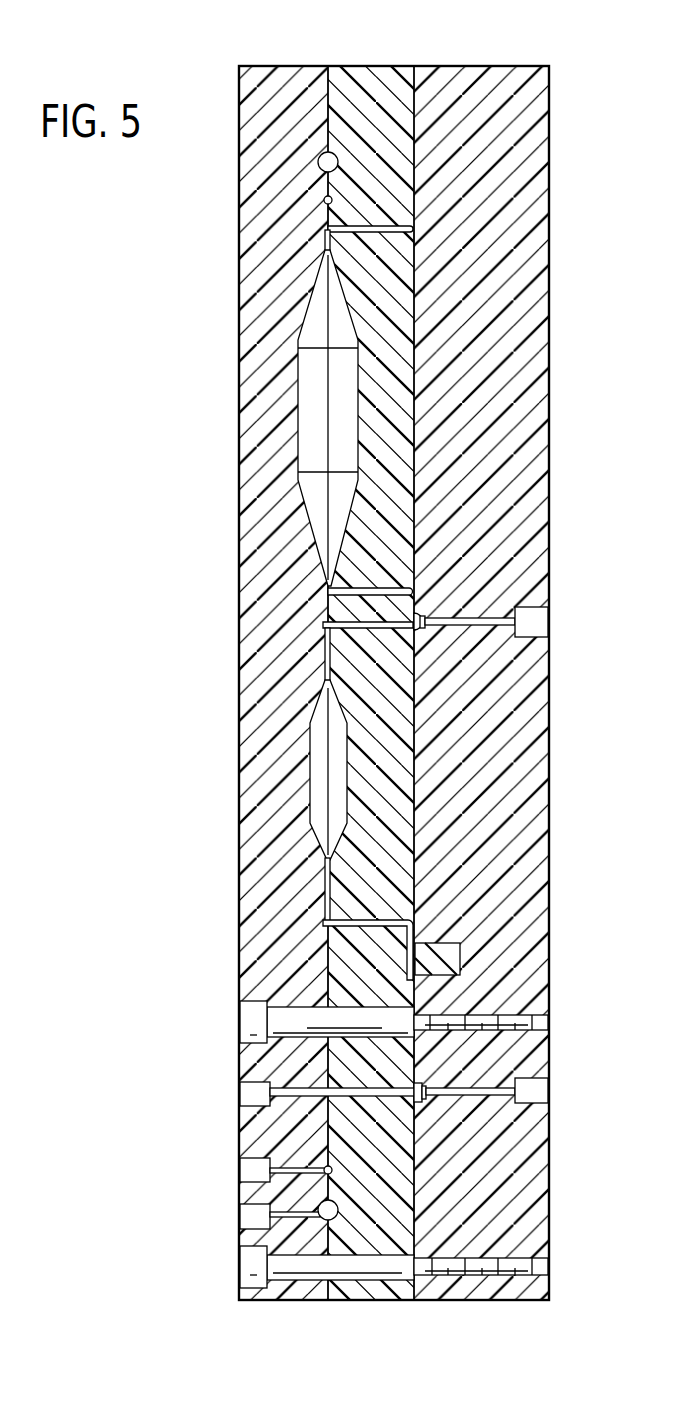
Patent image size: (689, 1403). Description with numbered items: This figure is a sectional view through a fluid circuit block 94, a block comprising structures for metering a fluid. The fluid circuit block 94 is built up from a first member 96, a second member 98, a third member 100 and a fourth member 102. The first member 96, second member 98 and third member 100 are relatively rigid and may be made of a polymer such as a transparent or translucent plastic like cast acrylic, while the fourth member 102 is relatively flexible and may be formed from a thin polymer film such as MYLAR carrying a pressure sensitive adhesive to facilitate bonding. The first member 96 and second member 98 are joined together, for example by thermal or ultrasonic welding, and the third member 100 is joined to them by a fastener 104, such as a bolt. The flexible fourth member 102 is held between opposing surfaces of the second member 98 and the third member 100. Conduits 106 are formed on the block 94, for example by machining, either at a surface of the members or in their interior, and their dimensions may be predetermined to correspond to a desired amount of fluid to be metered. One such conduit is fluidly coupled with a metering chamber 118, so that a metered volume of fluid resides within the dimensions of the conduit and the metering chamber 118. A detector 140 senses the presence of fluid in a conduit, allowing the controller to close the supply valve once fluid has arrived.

The fluid circuit block 94 is at (266, 56).
The first member 96 is at (250, 1062).
The second member 98 is at (372, 1300).
The third member 100 is at (537, 1300).
The fourth member 102 is at (413, 1300).
The fastener 104 is at (250, 1278).
The conduit 106 is at (320, 1211).
The metering chamber 118 is at (347, 773).
The detector 140 is at (460, 960).